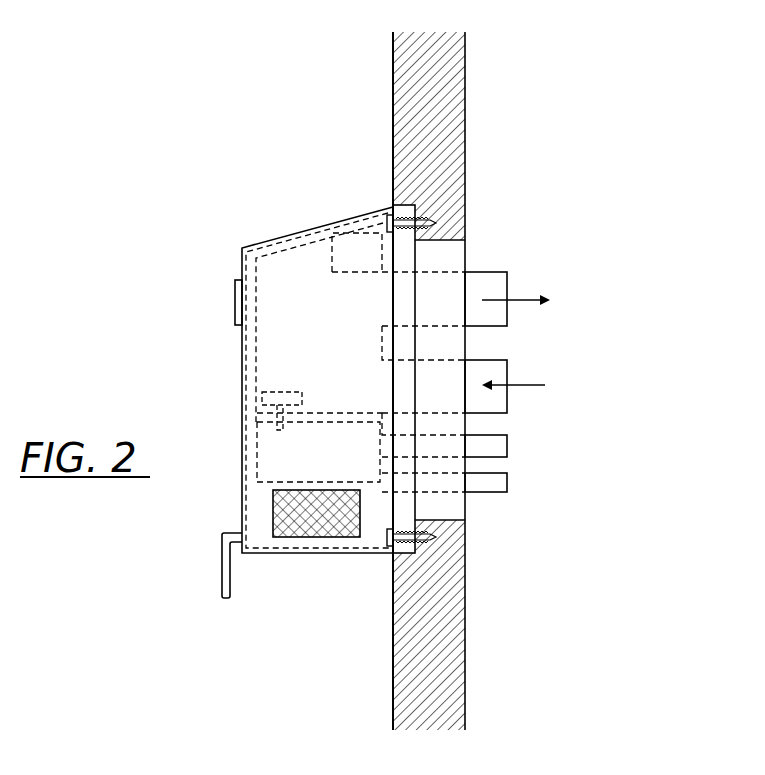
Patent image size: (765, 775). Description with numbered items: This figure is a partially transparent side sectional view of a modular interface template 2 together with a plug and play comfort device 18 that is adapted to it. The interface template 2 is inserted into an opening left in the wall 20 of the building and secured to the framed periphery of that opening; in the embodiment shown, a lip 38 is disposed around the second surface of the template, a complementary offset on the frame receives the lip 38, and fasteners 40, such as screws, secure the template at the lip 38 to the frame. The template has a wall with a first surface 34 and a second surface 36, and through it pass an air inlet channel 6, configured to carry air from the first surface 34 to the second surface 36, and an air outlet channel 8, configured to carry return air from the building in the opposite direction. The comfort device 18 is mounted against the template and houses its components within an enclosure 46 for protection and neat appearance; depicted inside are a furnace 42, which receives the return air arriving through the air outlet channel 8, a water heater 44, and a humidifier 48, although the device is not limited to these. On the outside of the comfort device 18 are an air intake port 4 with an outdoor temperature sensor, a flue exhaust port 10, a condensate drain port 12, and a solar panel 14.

The interface template 2 is at (466, 336).
The air intake port with outdoor temperature sensor 4 is at (274, 531).
The air inlet channel 6 is at (485, 272).
The air outlet channel 8 is at (508, 398).
The flue exhaust port 10 is at (235, 298).
The condensate drain port 12 is at (222, 562).
The solar panel 14 is at (292, 235).
The plug and play comfort device 18 is at (226, 356).
The wall 20 is at (393, 80).
The first surface 34 is at (382, 258).
The second surface 36 is at (466, 258).
The lip 38 is at (396, 193).
The fastener 40 is at (382, 212).
The air heater/furnace and/or air conditioner/chiller 42 is at (262, 247).
The water heater 44 is at (256, 460).
The enclosure 46 is at (243, 502).
The humidifier 48 is at (262, 398).